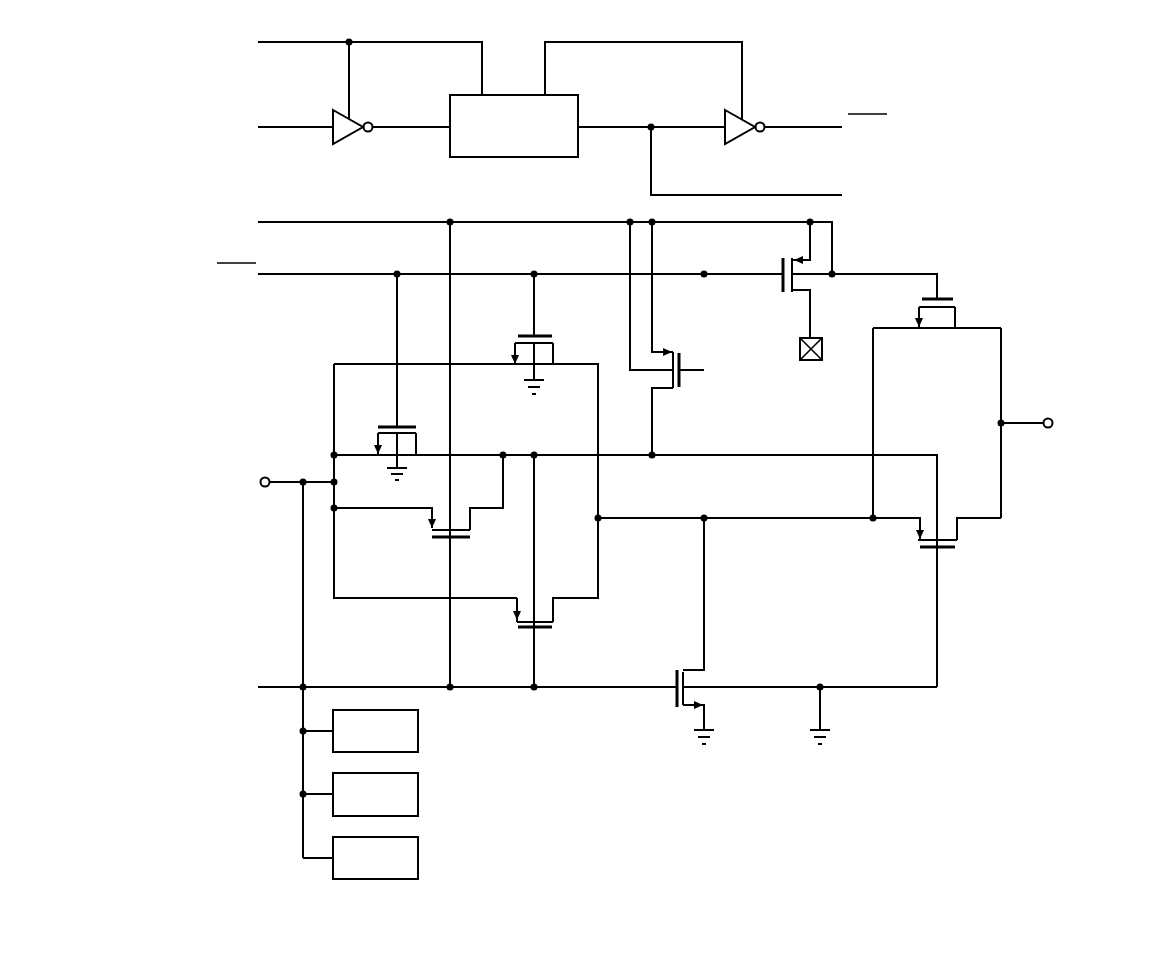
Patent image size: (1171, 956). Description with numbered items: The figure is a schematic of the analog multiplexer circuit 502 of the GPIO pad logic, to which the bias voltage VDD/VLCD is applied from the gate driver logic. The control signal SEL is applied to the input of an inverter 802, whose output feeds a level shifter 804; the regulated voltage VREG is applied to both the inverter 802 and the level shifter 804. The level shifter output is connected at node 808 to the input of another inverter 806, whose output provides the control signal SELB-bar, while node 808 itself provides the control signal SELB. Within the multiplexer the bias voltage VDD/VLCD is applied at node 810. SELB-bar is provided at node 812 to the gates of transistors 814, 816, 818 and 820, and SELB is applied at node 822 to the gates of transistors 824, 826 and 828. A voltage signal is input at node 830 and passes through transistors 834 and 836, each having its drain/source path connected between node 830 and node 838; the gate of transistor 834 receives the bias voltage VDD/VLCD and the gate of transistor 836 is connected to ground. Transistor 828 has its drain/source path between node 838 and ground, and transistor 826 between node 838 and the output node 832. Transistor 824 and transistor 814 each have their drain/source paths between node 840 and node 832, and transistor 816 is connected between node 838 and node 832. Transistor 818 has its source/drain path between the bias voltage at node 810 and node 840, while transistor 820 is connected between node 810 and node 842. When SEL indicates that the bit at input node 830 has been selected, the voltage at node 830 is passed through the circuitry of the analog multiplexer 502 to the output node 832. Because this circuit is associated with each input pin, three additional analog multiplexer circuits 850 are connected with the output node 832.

The analog multiplexer circuit 502 is at (990, 84).
The inverter 802 is at (356, 140).
The level shifter 804 is at (515, 158).
The inverter 806 is at (745, 140).
The node 808 is at (655, 124).
The node 810 is at (448, 220).
The node 812 is at (393, 278).
The transistor 814 is at (388, 426).
The transistor 816 is at (524, 335).
The transistor 818 is at (683, 382).
The transistor 820 is at (780, 263).
The node 822 is at (448, 684).
The transistor 824 is at (437, 540).
The transistor 826 is at (512, 637).
The transistor 828 is at (673, 698).
The input node 830 is at (1048, 430).
The output node 832 is at (262, 476).
The transistor 834 is at (948, 296).
The transistor 836 is at (945, 552).
The node 838 is at (868, 514).
The node 840 is at (541, 462).
The node 842 is at (805, 316).
The additional analog multiplexer circuits 850 is at (418, 733).